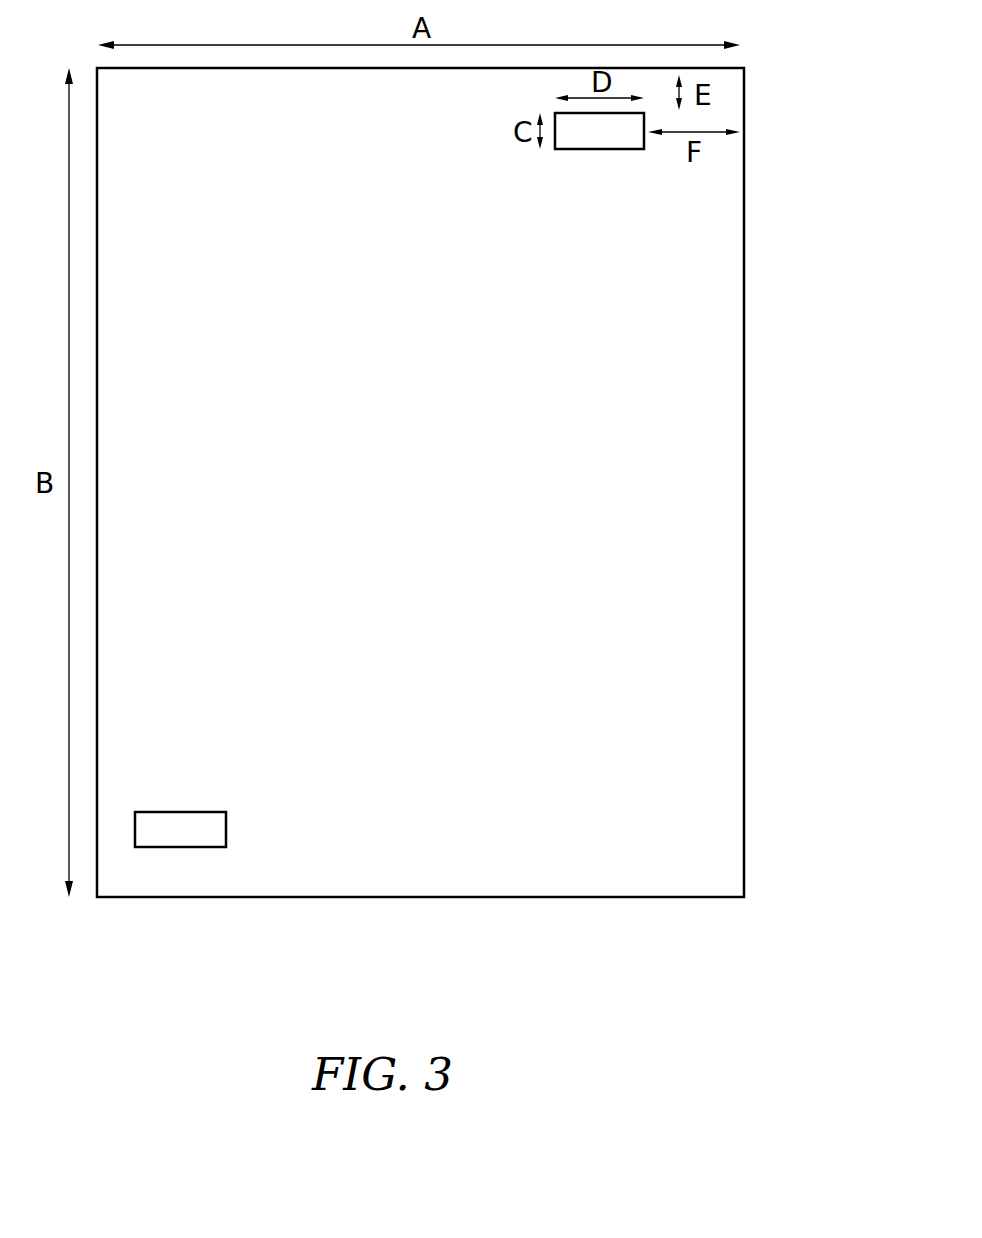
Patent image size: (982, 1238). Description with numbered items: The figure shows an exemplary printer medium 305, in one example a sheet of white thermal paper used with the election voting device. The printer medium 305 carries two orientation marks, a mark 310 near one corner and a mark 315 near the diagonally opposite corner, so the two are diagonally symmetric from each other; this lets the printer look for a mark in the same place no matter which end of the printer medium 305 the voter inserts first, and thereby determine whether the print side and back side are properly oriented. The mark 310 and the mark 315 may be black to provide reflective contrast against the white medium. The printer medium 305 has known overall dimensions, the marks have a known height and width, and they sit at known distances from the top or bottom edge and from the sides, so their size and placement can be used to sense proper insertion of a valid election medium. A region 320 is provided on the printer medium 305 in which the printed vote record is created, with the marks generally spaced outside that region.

The printer medium 305 is at (743, 563).
The mark 310 is at (599, 149).
The mark 315 is at (226, 828).
The region 320 is at (440, 494).